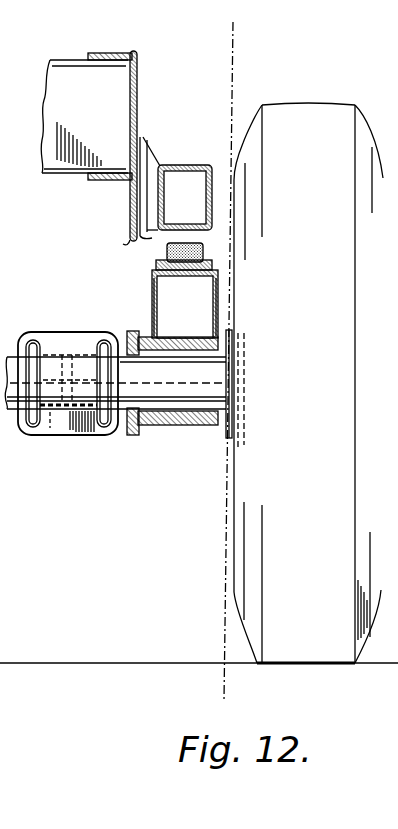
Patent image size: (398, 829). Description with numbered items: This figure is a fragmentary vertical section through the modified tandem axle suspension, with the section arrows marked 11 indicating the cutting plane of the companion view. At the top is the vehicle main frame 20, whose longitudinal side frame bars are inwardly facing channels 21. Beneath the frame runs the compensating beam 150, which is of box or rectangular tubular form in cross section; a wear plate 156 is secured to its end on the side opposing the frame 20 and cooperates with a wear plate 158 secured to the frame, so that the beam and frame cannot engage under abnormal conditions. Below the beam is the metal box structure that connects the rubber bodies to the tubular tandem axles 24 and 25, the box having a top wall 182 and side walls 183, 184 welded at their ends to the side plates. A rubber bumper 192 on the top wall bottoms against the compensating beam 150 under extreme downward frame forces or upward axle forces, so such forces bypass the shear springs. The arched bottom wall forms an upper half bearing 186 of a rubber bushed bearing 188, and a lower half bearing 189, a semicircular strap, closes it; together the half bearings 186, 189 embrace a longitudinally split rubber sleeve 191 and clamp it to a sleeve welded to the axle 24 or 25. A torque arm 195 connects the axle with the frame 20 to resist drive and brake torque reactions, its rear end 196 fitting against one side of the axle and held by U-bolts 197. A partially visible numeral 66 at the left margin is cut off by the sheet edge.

The section line 11- 11 is at (196, 33).
The main frame 20 is at (42, 62).
The longitudinal side frame bars 21 is at (110, 54).
The front tandem axle 24 is at (347, 642).
The rear tandem axle 25 is at (50, 365).
The support member 66 is at (9, 261).
The compensating beam 150 is at (199, 163).
The wear plate 156 is at (142, 133).
The wear plate 158 is at (168, 58).
The top wall 182 is at (193, 283).
The side wall 183 is at (152, 292).
The side wall 184 is at (217, 297).
The upper half bearing 186 is at (185, 345).
The rubber bushed bearing 188 is at (246, 345).
The lower half bearing 189 is at (218, 363).
The rubber sleeve 191 is at (190, 363).
The rubber bumper 192 is at (205, 252).
The torque arm 195 is at (62, 388).
The rear end 196 is at (96, 433).
The U-bolts 197 is at (27, 431).